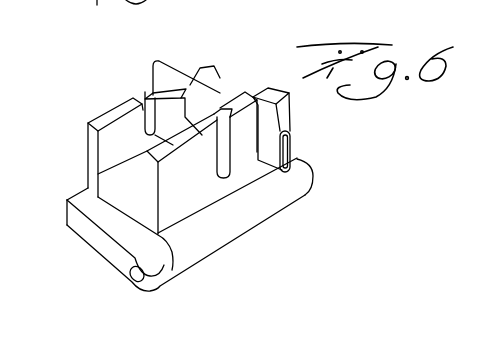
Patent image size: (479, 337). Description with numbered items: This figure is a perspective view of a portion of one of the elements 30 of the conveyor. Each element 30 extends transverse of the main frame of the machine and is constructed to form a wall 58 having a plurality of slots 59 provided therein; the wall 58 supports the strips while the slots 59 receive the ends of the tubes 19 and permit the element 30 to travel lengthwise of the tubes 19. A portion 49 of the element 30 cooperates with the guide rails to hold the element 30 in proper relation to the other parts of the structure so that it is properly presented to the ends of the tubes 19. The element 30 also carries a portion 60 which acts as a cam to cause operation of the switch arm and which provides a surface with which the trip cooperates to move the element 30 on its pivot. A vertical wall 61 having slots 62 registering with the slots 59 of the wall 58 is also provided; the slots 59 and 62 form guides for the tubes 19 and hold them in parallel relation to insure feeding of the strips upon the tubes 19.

The tube 19 is at (278, 129).
The element of the conveyor 30 is at (88, 181).
The portion 49 is at (102, 223).
The wall 58 is at (235, 135).
The slot 59 is at (221, 107).
The portion 60 is at (169, 171).
The vertical wall 61 is at (108, 112).
The slot 62 is at (157, 95).